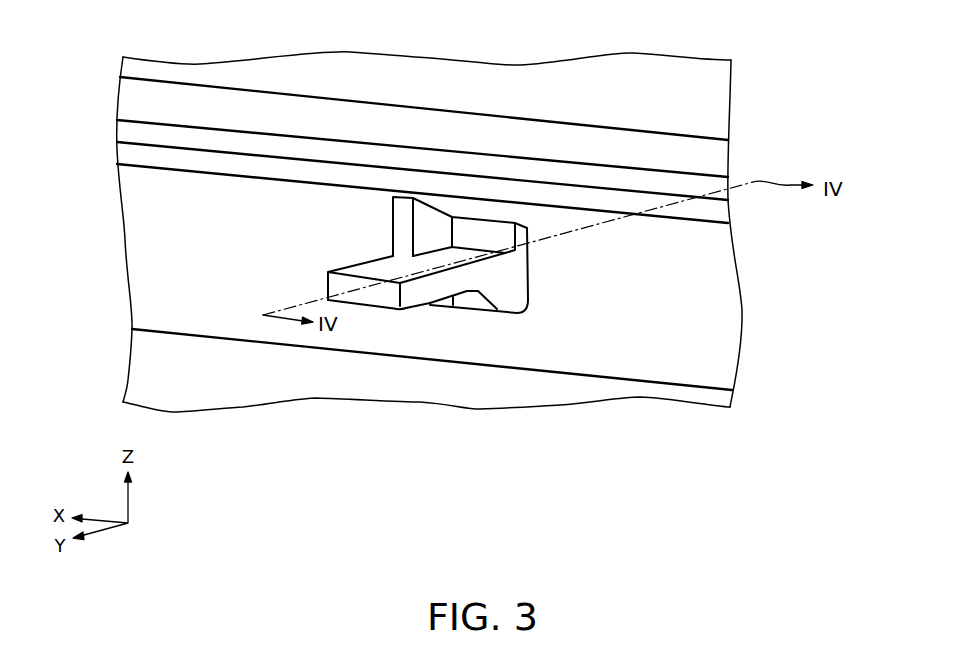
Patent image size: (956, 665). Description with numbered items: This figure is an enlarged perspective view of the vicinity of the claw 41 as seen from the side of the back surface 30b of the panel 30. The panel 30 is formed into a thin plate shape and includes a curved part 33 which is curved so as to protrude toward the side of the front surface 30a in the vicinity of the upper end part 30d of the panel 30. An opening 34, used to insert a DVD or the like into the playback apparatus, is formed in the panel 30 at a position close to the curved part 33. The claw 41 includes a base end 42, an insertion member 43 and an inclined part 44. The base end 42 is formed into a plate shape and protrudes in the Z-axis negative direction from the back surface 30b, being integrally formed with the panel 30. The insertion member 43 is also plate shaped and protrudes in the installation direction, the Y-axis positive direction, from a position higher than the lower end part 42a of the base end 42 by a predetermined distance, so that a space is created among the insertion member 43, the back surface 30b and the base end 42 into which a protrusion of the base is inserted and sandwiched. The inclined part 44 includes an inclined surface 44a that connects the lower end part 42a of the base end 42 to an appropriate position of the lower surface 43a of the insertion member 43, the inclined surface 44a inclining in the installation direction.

The panel 30 is at (282, 86).
The front surface 30a is at (438, 125).
The back surface 30b is at (138, 257).
The upper end part 30d is at (727, 201).
The curved part 33 is at (727, 331).
The opening 34 is at (642, 392).
The claw 41 is at (454, 331).
The base end 42 is at (527, 273).
The lower end part 42a is at (517, 305).
The insertion member 43 is at (378, 300).
The lower surface 43a is at (409, 307).
The inclined part 44 is at (490, 320).
The inclined surface 44a is at (467, 300).